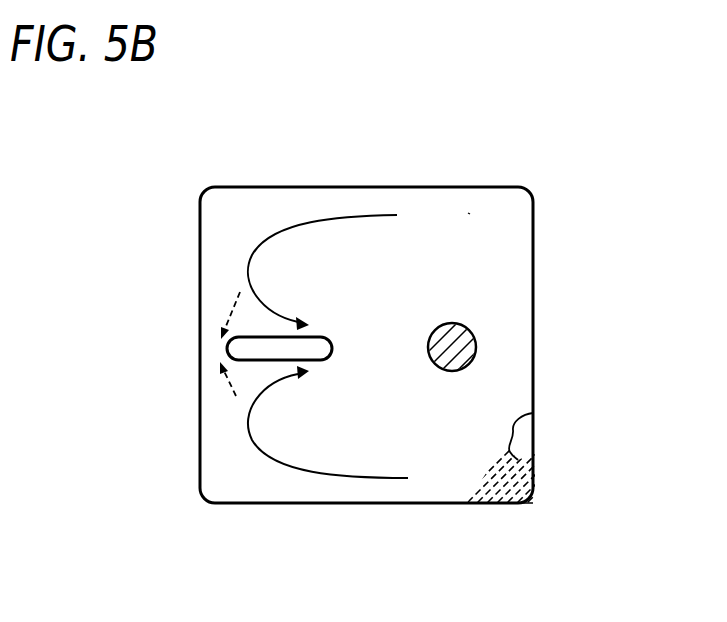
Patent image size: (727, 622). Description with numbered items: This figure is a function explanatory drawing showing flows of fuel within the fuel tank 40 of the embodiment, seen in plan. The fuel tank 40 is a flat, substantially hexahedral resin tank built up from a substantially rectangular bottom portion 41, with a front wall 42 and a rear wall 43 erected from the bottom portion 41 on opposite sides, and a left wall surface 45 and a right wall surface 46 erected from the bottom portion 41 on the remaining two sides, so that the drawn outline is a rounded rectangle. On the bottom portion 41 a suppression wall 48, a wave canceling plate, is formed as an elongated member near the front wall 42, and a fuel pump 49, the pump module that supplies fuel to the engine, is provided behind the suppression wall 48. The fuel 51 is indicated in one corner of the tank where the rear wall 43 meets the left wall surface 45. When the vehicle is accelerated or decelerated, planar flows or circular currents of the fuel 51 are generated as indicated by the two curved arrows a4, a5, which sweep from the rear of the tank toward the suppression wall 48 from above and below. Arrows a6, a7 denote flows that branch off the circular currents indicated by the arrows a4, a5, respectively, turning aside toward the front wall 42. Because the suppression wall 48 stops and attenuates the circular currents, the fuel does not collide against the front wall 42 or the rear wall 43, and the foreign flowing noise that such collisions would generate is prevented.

The fuel tank 40 is at (243, 163).
The bottom portion 41 is at (468, 213).
The front wall 42 is at (200, 240).
The rear wall 43 is at (533, 240).
The left wall surface 45 is at (487, 505).
The right wall surface 46 is at (437, 188).
The suppression wall 48 is at (320, 337).
The fuel pump 49 is at (453, 323).
The fuel 51 is at (533, 413).
The arrow a4 is at (322, 264).
The arrow a5 is at (327, 428).
The arrow a6 is at (226, 307).
The arrow a7 is at (225, 393).